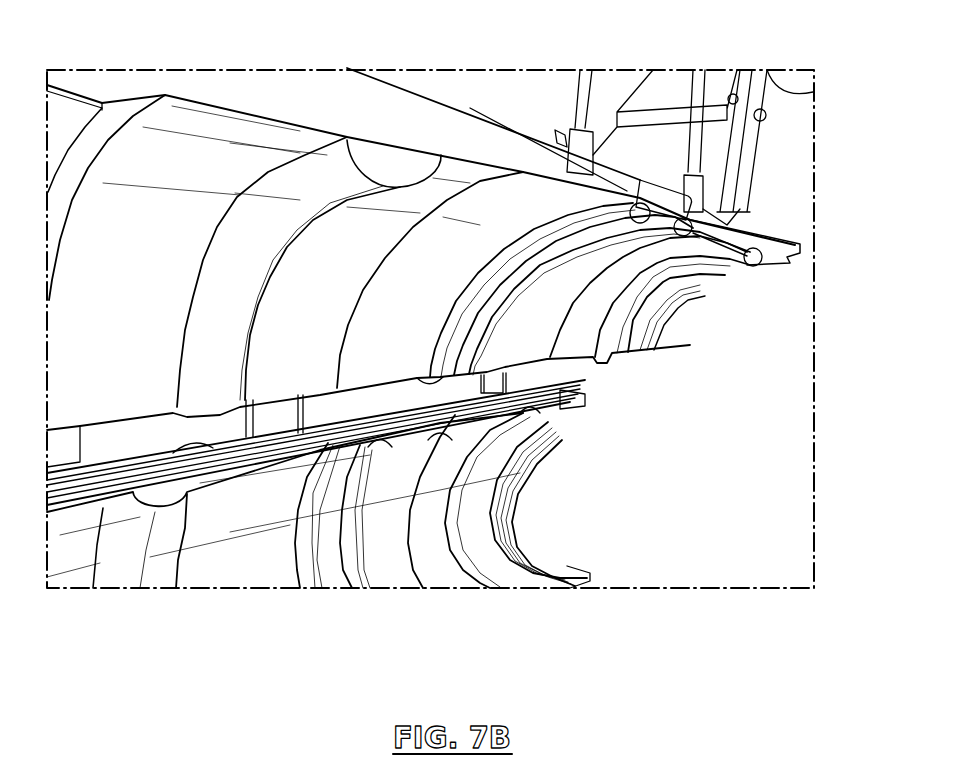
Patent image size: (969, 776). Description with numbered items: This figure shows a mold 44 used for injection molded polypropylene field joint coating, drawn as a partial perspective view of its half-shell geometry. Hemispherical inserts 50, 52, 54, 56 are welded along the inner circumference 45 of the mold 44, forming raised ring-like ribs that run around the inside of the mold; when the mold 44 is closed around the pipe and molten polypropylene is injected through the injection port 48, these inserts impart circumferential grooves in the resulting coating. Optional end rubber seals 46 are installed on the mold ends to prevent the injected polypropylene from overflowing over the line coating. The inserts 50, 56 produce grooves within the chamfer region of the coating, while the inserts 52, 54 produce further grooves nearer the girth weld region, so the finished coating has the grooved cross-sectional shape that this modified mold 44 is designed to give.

The mold 44 is at (445, 97).
The inner circumference 45 is at (168, 165).
The end rubber seals 46 is at (770, 270).
The injection port 48 is at (328, 532).
The hemispherical insert 50 is at (735, 257).
The hemispherical insert 52 is at (707, 210).
The hemispherical insert 54 is at (663, 179).
The hemispherical insert 56 is at (307, 170).